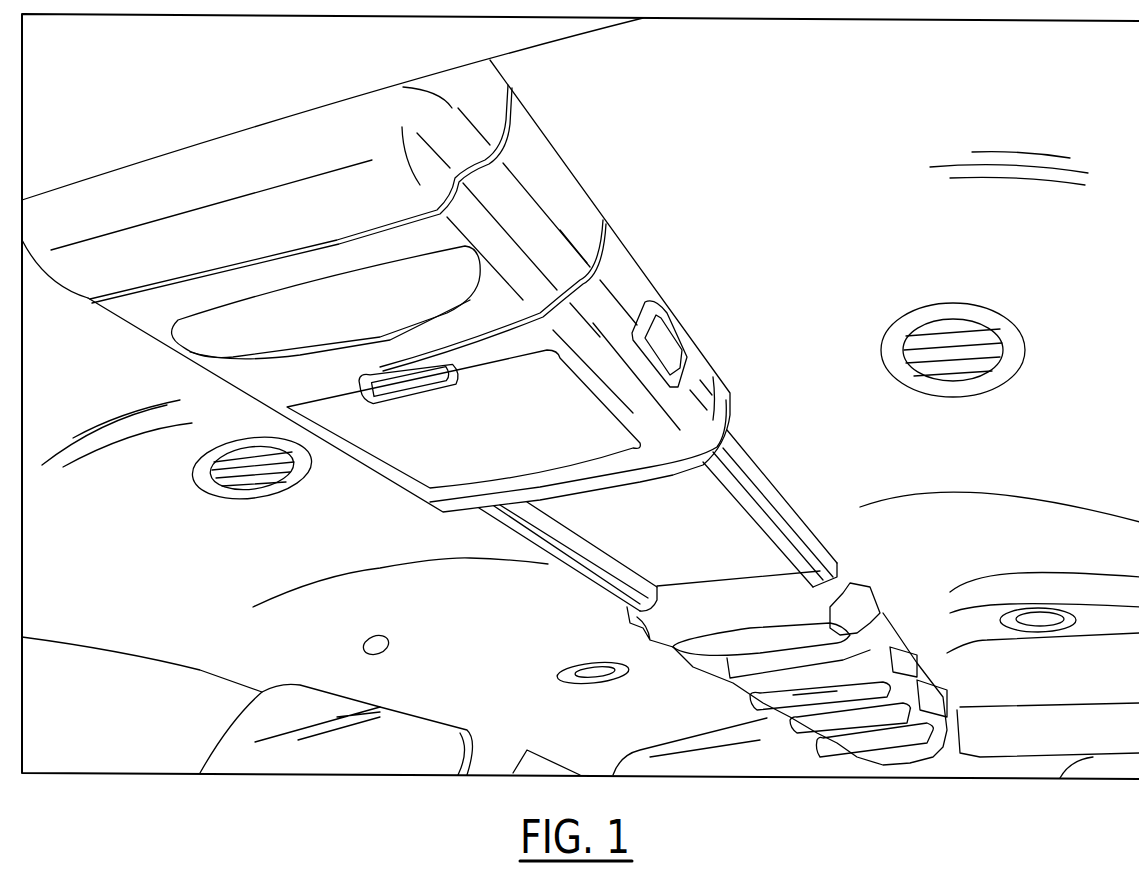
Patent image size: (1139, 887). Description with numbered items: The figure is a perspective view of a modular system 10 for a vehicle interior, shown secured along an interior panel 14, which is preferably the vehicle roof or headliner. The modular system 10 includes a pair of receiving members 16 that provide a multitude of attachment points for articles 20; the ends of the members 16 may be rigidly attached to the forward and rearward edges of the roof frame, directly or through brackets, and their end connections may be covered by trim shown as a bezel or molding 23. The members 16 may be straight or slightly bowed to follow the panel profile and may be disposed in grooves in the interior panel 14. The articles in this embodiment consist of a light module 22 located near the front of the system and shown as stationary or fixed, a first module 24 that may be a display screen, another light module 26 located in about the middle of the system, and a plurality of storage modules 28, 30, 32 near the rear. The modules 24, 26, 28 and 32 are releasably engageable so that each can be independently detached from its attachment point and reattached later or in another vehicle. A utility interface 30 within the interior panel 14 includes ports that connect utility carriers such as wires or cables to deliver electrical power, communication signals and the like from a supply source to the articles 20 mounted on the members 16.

The modular system 10 is at (522, 462).
The interior panel 14 is at (233, 568).
The receiving members 16 is at (763, 490).
The articles 20 is at (586, 110).
The light module 22 is at (490, 253).
The bezel or molding 23 is at (298, 140).
The first module 24 is at (573, 387).
The light module 26 is at (850, 590).
The storage module 28 is at (777, 703).
The storage module 30 is at (810, 723).
The storage module 32 is at (837, 740).